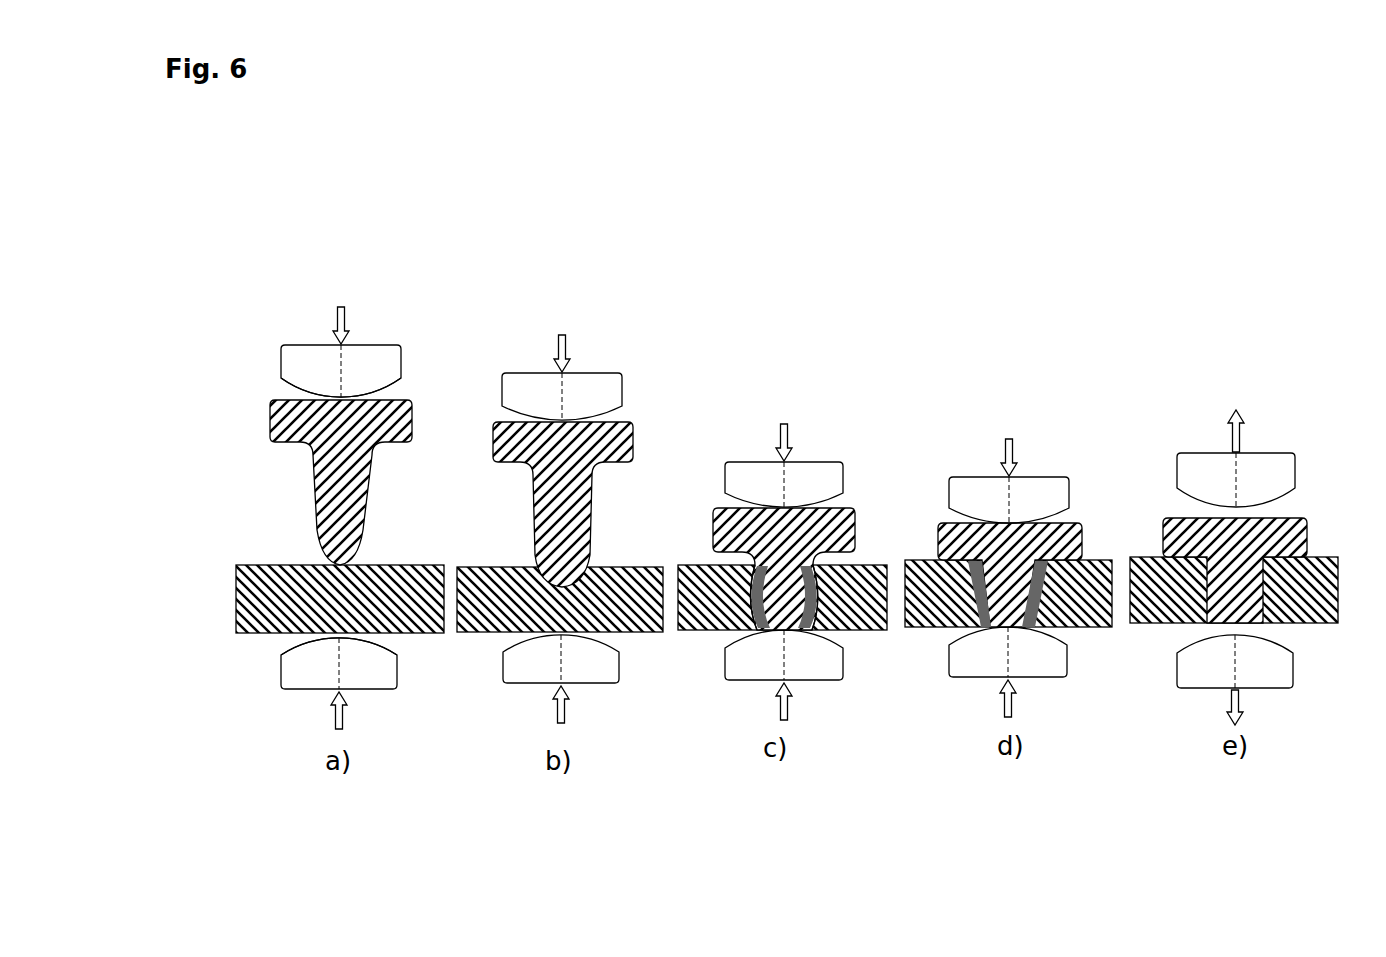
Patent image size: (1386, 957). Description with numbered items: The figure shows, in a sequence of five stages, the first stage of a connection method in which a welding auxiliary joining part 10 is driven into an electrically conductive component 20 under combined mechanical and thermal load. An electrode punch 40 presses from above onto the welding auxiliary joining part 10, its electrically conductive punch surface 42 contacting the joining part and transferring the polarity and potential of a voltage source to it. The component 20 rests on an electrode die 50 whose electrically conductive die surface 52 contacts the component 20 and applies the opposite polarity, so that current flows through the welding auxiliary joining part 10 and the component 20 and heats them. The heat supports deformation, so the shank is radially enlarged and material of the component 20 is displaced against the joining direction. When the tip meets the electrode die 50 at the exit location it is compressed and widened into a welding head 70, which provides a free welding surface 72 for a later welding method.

The welding auxiliary joining part 10 is at (330, 462).
The component 20 is at (240, 580).
The electrode punch 40 is at (386, 350).
The punch surface 42 is at (388, 387).
The electrode die 50 is at (372, 674).
The die surface 52 is at (295, 641).
The welding head 70 is at (753, 632).
The free welding surface 72 is at (835, 627).